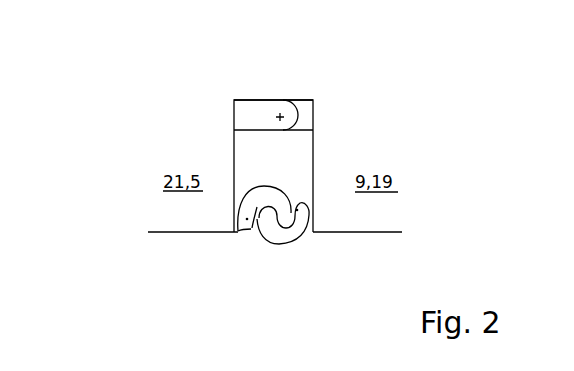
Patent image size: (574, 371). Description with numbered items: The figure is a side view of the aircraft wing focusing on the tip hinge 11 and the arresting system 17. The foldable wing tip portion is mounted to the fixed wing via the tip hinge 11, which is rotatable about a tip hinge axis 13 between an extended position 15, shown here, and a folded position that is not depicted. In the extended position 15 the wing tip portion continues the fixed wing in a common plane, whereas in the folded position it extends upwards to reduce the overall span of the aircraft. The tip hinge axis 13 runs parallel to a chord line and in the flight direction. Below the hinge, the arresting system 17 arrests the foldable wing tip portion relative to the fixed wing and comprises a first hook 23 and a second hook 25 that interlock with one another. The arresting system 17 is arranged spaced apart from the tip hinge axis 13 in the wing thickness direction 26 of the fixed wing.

The tip hinge 11 is at (266, 87).
The tip hinge axis 13 is at (296, 119).
The extended position 15 is at (403, 66).
The arresting system 17 is at (266, 254).
The first hook 23 is at (290, 235).
The second hook 25 is at (240, 234).
The wing thickness direction 26 is at (109, 145).